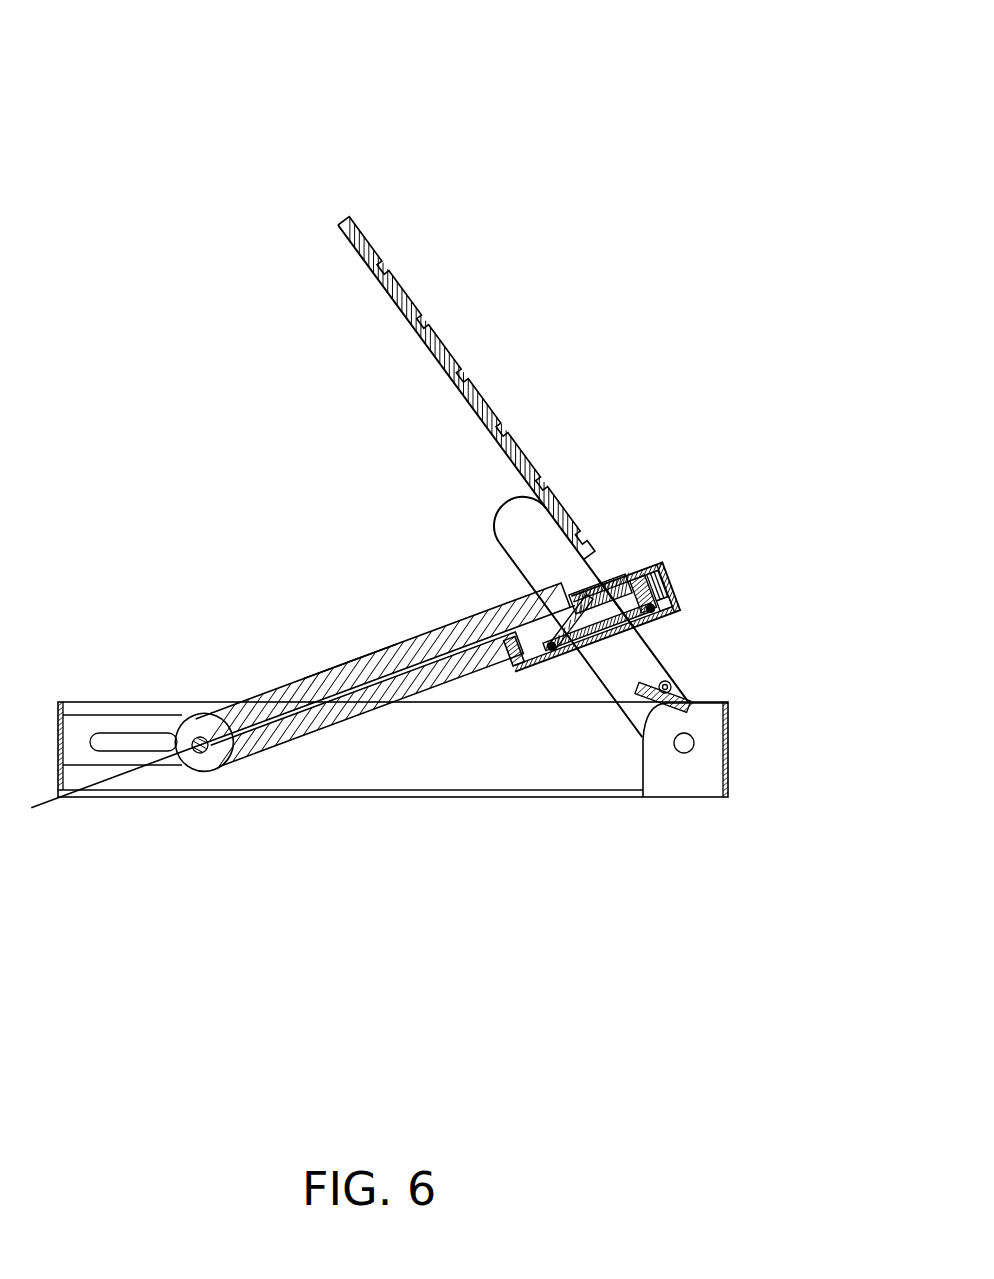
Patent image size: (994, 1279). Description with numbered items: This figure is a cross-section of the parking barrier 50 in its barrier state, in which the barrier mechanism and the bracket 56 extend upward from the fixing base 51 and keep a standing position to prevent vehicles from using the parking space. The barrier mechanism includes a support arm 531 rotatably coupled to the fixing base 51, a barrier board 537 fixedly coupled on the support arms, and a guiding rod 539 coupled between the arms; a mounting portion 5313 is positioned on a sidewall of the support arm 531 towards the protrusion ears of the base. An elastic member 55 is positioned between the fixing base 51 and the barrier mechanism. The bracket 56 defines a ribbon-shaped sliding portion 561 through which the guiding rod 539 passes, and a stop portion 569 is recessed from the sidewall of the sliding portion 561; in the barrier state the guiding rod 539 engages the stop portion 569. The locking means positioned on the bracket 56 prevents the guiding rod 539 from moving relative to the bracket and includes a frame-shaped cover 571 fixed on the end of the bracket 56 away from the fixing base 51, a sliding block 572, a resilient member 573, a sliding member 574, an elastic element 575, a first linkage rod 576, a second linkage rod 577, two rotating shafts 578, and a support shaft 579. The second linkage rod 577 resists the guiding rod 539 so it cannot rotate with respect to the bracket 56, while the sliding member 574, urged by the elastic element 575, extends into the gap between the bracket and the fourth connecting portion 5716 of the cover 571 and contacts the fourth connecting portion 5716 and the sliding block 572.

The parking barrier 50 is at (388, 52).
The fixing base 51 is at (125, 787).
The elastic member 55 is at (692, 703).
The bracket 56 is at (325, 668).
The sliding portion 561 is at (367, 658).
The support arm 531 is at (503, 532).
The barrier board 537 is at (402, 302).
The guiding rod 539 is at (565, 582).
The mounting portion 5313 is at (678, 682).
The stop portion 569 is at (720, 657).
The cover 571 is at (392, 830).
The sliding block 572 is at (713, 612).
The resilient member 573 is at (718, 568).
The sliding member 574 is at (675, 517).
The elastic element 575 is at (598, 578).
The first linkage rod 576 is at (600, 822).
The second linkage rod 577 is at (528, 820).
The rotating shaft 578 is at (472, 830).
The support shaft 579 is at (522, 610).
The fourth connecting portion 5716 is at (758, 532).